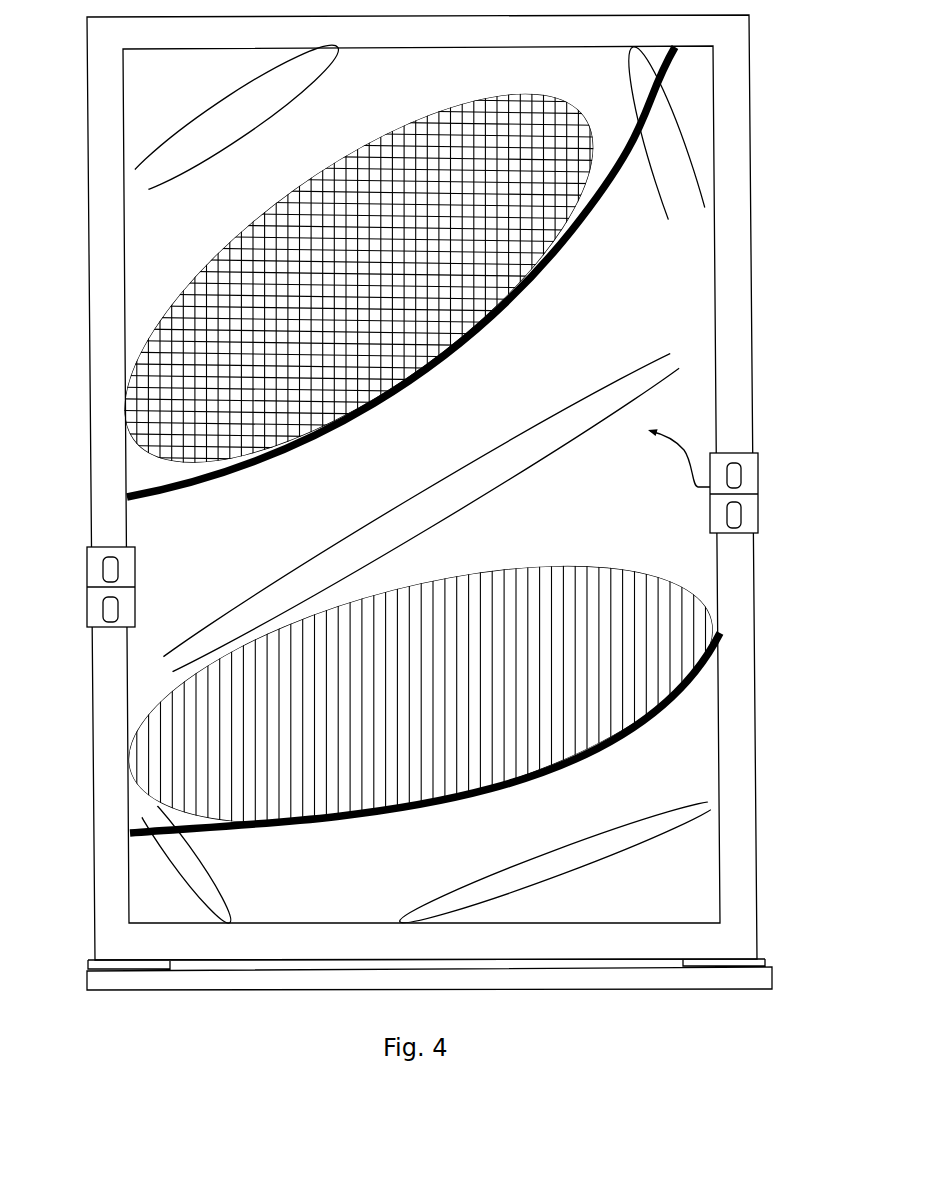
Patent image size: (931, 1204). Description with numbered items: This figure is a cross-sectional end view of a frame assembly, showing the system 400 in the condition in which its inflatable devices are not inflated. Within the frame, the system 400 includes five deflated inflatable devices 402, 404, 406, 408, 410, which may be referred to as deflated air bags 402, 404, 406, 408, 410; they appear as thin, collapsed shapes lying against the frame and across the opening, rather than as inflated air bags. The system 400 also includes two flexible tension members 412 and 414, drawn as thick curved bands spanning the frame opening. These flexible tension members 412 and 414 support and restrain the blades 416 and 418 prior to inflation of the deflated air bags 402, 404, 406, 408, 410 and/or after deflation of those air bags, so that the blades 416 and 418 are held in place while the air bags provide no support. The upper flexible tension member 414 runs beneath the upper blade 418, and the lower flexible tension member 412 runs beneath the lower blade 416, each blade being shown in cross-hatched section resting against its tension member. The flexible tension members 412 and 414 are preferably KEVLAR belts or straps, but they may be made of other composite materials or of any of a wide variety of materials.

The system 400 is at (78, 409).
The deflated inflatable device 402 is at (720, 805).
The deflated inflatable device 404 is at (170, 862).
The deflated inflatable device 406 is at (183, 652).
The deflated inflatable device 408 is at (688, 182).
The deflated inflatable device 410 is at (125, 190).
The flexible tension member 412 is at (129, 834).
The flexible tension member 414 is at (128, 493).
The blade 416 is at (150, 782).
The blade 418 is at (150, 328).